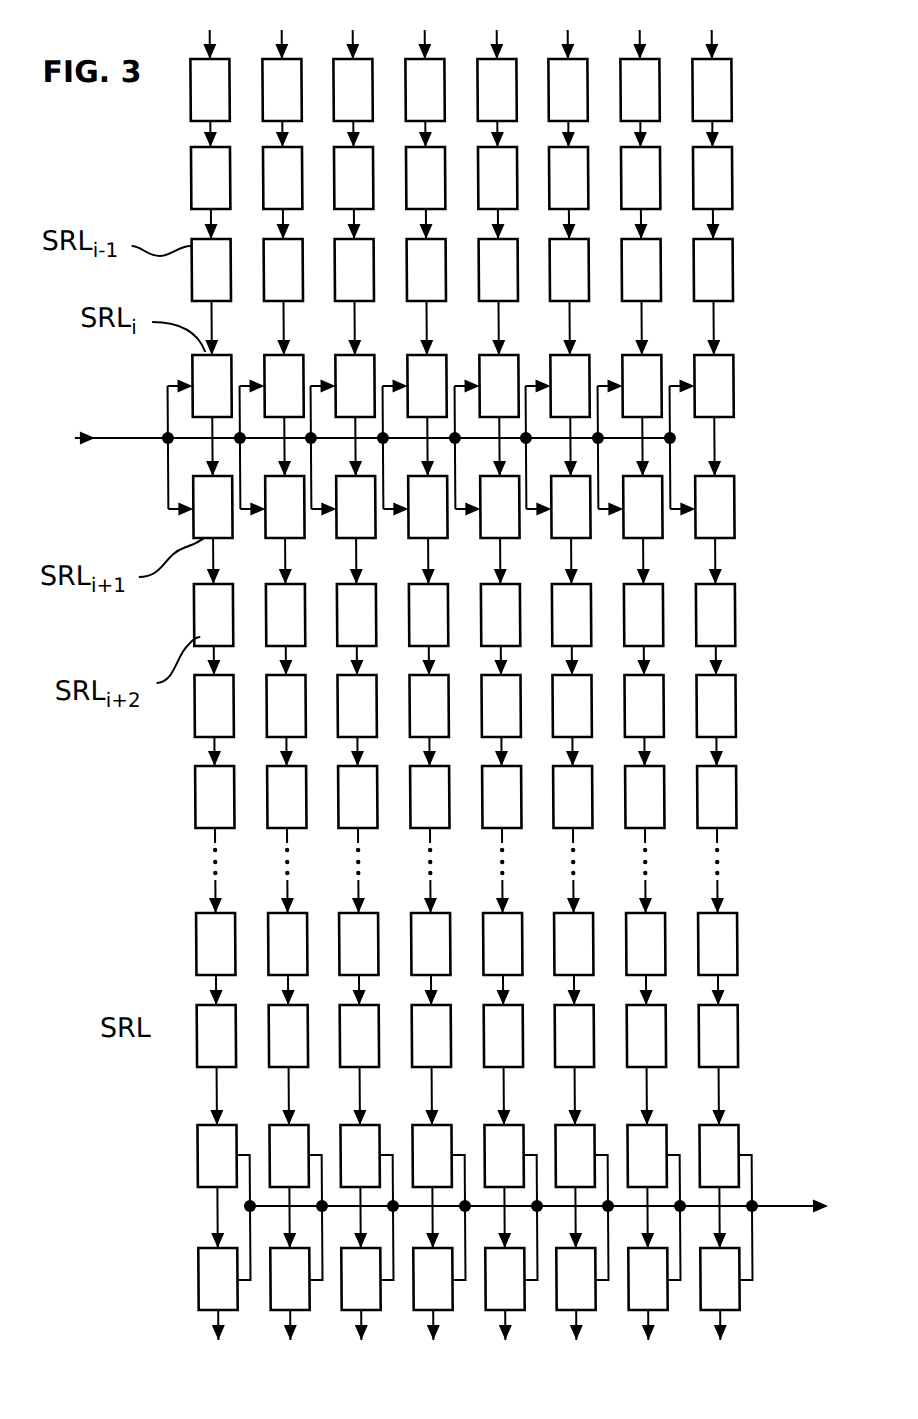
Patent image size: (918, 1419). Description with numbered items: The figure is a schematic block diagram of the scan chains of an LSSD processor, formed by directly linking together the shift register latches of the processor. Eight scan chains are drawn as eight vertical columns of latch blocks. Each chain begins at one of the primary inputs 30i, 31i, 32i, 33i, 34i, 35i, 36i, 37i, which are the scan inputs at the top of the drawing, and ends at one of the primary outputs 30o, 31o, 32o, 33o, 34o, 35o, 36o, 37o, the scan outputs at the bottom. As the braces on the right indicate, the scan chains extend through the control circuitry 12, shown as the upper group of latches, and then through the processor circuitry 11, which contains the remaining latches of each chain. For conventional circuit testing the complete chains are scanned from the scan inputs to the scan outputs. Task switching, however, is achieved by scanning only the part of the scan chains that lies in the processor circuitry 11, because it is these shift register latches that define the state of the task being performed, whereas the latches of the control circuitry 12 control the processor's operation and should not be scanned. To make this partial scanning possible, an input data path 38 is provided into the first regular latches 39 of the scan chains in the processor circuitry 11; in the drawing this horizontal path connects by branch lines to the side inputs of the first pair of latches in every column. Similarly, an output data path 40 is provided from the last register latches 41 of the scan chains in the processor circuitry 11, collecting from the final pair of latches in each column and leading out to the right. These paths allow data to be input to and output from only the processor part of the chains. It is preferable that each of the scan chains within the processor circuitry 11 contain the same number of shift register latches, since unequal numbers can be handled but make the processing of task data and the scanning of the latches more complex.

The processor circuitry 11 is at (775, 1318).
The control circuitry 12 is at (775, 40).
The input data path 38 is at (359, 438).
The first regular latches 39 is at (148, 538).
The output data path 40 is at (555, 1206).
The last register latches 41 is at (150, 1123).
The primary input 30i is at (209, 29).
The primary input 31i is at (281, 29).
The primary input 32i is at (352, 29).
The primary input 33i is at (424, 29).
The primary input 34i is at (496, 29).
The primary input 35i is at (567, 29).
The primary input 36i is at (639, 29).
The primary input 37i is at (711, 29).
The primary output 30o is at (218, 1344).
The primary output 31o is at (290, 1344).
The primary output 32o is at (361, 1344).
The primary output 33o is at (433, 1344).
The primary output 34o is at (505, 1344).
The primary output 35o is at (576, 1344).
The primary output 36o is at (648, 1344).
The primary output 37o is at (720, 1344).